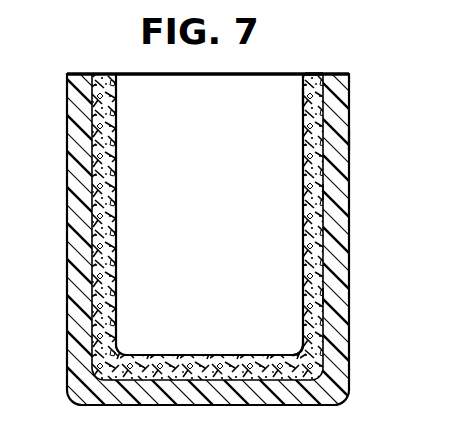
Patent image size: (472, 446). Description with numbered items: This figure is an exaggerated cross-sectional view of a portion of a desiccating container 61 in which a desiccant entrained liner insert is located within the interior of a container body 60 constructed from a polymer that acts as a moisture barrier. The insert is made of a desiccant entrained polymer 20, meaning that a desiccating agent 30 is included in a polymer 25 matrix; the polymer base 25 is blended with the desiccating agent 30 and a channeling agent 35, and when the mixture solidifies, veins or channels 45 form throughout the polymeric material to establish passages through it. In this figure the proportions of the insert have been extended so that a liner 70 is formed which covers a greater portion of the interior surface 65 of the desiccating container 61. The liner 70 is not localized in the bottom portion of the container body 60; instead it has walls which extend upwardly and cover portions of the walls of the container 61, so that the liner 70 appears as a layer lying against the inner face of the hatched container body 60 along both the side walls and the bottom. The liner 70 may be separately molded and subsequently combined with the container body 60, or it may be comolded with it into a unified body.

The desiccant entrained polymer 20 is at (286, 194).
The polymer base 25 is at (306, 131).
The desiccating agent 30 is at (308, 97).
The channeling agent 35 is at (323, 190).
The channels 45 is at (319, 74).
The container body 60 is at (348, 271).
The desiccating container 61 is at (362, 144).
The interior surface 65 is at (323, 297).
The liner 70 is at (318, 352).